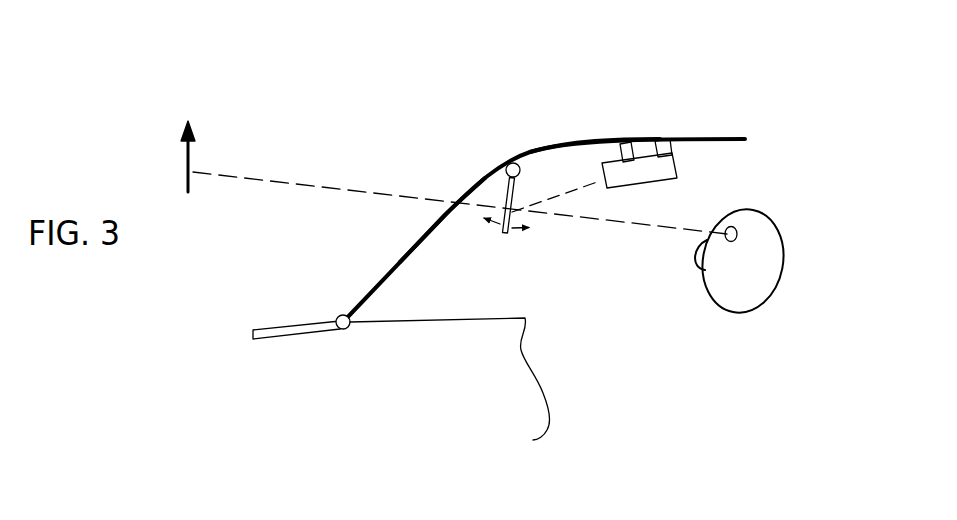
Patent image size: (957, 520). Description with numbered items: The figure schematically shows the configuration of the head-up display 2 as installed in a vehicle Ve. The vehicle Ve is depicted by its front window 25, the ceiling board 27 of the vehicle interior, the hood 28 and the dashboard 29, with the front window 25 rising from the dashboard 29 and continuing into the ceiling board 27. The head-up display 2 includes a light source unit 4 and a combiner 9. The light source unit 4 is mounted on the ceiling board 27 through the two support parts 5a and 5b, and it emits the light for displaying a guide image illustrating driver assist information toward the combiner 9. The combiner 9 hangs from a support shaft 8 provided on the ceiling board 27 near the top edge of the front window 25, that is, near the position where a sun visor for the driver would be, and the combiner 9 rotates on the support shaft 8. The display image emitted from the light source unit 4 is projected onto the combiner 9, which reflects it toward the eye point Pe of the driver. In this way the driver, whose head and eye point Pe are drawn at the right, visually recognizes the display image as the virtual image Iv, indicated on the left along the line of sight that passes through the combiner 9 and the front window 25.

The head-up display 2 is at (536, 82).
The light source unit 4 is at (660, 172).
The support part 5a is at (627, 141).
The support part 5b is at (664, 140).
The support shaft 8 is at (515, 162).
The combiner 9 is at (505, 185).
The front window 25 is at (478, 182).
The ceiling board 27 is at (550, 144).
The hood 28 is at (310, 333).
The dashboard 29 is at (553, 381).
The vehicle Ve is at (713, 137).
The eye point Pe is at (723, 228).
The virtual image Iv is at (188, 171).